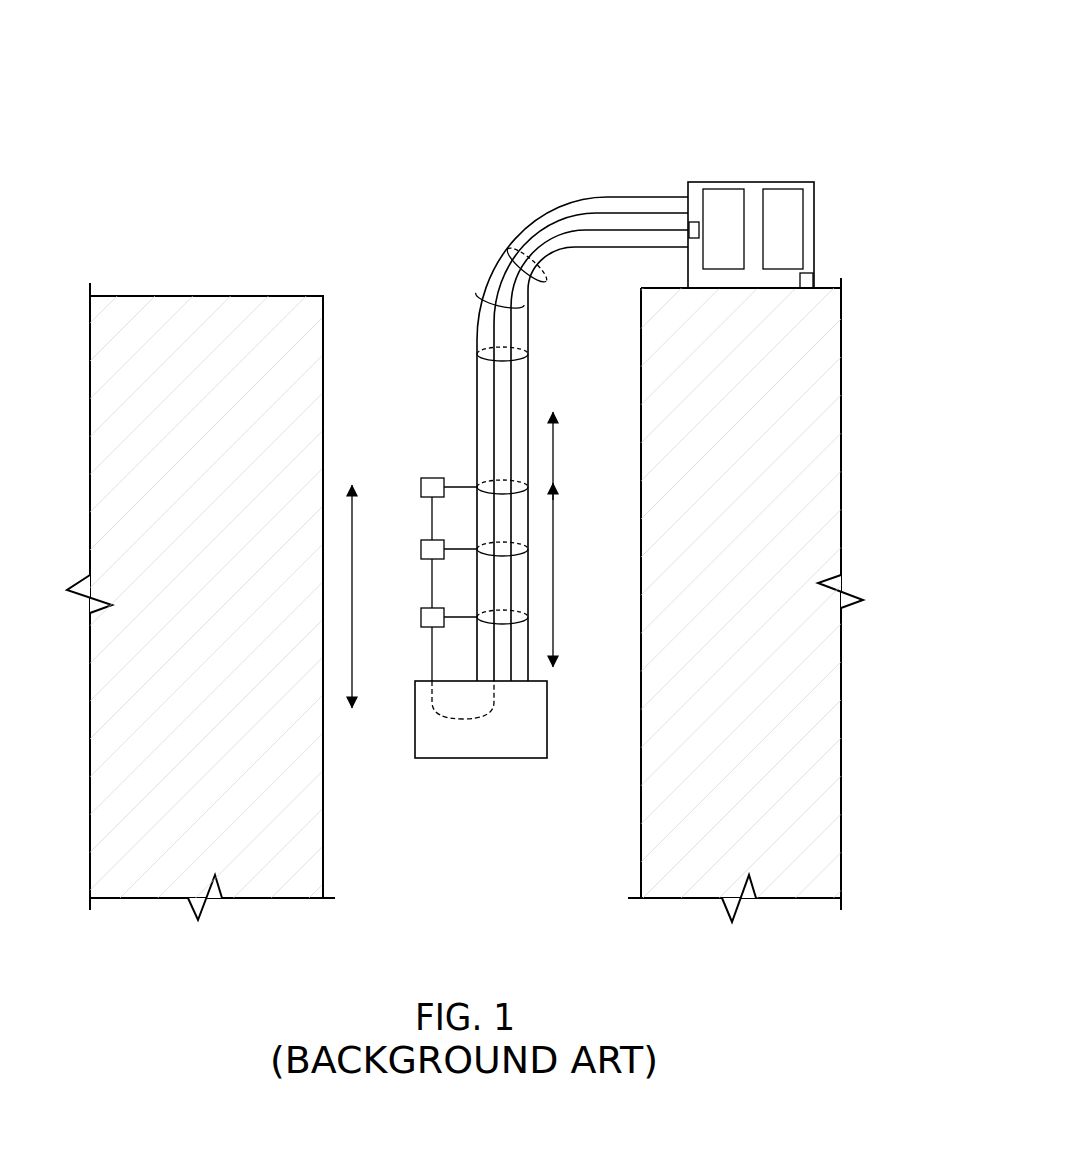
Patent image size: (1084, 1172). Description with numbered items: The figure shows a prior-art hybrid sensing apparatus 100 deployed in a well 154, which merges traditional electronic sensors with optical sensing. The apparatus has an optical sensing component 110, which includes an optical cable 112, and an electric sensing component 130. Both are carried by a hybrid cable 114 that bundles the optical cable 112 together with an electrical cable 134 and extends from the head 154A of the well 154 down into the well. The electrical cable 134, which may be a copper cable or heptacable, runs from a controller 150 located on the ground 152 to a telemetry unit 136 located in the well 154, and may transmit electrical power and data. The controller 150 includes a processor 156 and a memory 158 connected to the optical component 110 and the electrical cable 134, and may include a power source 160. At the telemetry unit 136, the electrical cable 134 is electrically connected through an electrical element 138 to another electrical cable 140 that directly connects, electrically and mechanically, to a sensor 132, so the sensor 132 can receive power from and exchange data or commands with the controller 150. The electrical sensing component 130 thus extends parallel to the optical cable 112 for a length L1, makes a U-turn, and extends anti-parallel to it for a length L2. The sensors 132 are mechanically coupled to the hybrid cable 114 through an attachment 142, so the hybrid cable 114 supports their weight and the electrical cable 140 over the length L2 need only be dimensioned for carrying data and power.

The hybrid sensing apparatus 100 is at (797, 55).
The optical sensing component 110 is at (597, 232).
The optical cable 112 is at (497, 297).
The hybrid cable 114 is at (477, 390).
The electric sensing component 130 is at (424, 764).
The sensor 132 is at (421, 617).
The electrical cable 134 is at (538, 242).
The telemetry unit 136 is at (516, 758).
The electrical element 138 is at (463, 720).
The electrical cable 140 is at (432, 650).
The attachment 142 is at (458, 485).
The controller 150 is at (750, 182).
The ground 152 is at (135, 296).
The well 154 is at (323, 483).
The head 154A is at (312, 296).
The processor 156 is at (710, 189).
The memory 158 is at (797, 189).
The power source 160 is at (813, 282).
The length L1 is at (553, 540).
The length L2 is at (352, 540).